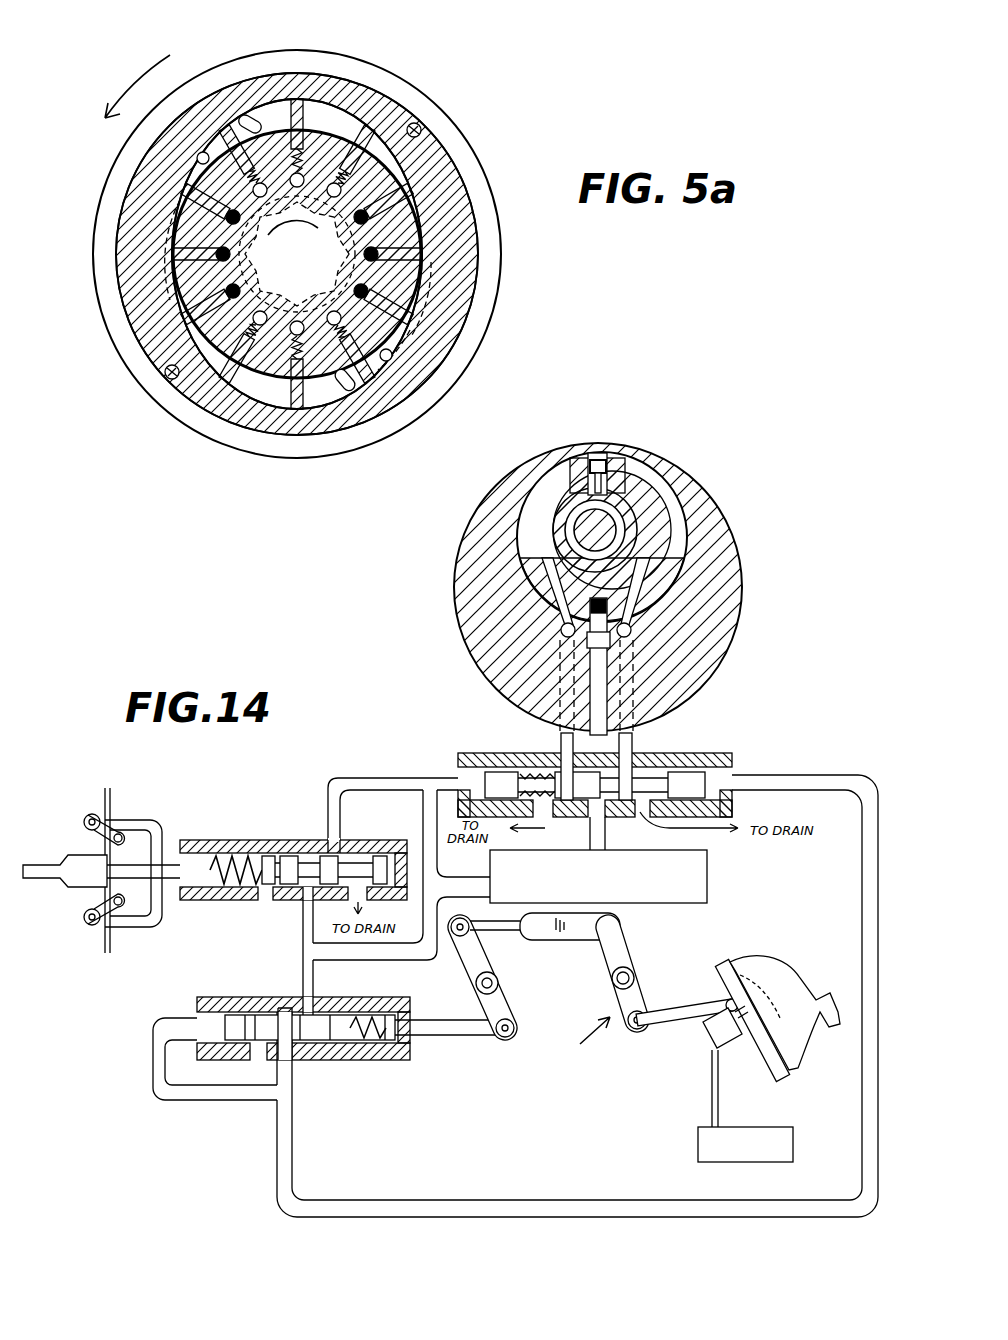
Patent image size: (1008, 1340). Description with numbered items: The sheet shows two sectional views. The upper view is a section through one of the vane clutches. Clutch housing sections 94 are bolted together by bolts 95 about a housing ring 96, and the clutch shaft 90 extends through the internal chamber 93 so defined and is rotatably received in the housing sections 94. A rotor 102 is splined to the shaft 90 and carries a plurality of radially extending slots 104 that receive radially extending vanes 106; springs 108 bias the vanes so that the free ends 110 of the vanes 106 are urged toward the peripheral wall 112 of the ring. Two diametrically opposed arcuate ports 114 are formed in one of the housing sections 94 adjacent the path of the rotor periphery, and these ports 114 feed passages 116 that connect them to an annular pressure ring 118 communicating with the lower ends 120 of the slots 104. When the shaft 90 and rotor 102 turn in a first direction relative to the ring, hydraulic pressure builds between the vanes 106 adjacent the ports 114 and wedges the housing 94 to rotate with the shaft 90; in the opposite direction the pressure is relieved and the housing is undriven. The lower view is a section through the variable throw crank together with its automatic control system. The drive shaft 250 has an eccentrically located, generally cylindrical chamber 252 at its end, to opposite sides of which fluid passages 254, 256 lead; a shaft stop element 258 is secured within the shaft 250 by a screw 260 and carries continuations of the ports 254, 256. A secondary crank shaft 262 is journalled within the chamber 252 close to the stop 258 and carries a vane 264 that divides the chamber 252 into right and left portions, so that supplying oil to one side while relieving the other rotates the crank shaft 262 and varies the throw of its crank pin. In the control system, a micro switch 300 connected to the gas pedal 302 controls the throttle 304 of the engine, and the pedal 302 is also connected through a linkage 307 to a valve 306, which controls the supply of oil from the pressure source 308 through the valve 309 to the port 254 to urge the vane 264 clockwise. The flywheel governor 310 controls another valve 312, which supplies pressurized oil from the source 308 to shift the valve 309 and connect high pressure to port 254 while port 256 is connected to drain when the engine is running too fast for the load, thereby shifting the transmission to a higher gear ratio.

In FIG. 5a, the clutch shaft 90 is at (378, 216).
In FIG. 5a, the pumping chamber 93 is at (333, 118).
In FIG. 5a, the clutch housing sections 94 is at (472, 167).
In FIG. 5a, the bolts 95 is at (420, 128).
In FIG. 5a, the housing ring 96 is at (467, 226).
In FIG. 5a, the rotor 102 is at (392, 355).
In FIG. 5a, the radially extending slots 104 is at (300, 343).
In FIG. 5a, the radially extending vanes 106 is at (359, 380).
In FIG. 5a, the springs 108 is at (262, 328).
In FIG. 5a, the free ends of the vanes 110 is at (214, 406).
In FIG. 5a, the peripheral wall 112 is at (418, 290).
In FIG. 5a, the arcuate ports 114 is at (257, 122).
In FIG. 5a, the passages 116 is at (197, 158).
In FIG. 5a, the annular pressure ring 118 is at (171, 233).
In FIG. 5a, the lower ends of slots 120 is at (263, 192).
In FIG. 14, the drive shaft 250 is at (742, 614).
In FIG. 14, the eccentrically located chamber 252 is at (655, 500).
In FIG. 14, the fluid passage 254 is at (634, 612).
In FIG. 14, the fluid passage 256 is at (561, 636).
In FIG. 14, the shaft stop element 258 is at (676, 562).
In FIG. 14, the screw 260 is at (611, 641).
In FIG. 14, the secondary crank shaft 262 is at (556, 528).
In FIG. 14, the vane 264 is at (603, 457).
In FIG. 14, the micro switch 300 is at (712, 1038).
In FIG. 14, the gas pedal 302 is at (722, 968).
In FIG. 14, the throttle 304 is at (698, 1150).
In FIG. 14, the valve 306 is at (366, 1062).
In FIG. 14, the linkage 307 is at (593, 988).
In FIG. 14, the pressure source 308 is at (676, 903).
In FIG. 14, the valve 309 is at (686, 752).
In FIG. 14, the flywheel governor 310 is at (152, 920).
In FIG. 14, the valve 312 is at (285, 840).